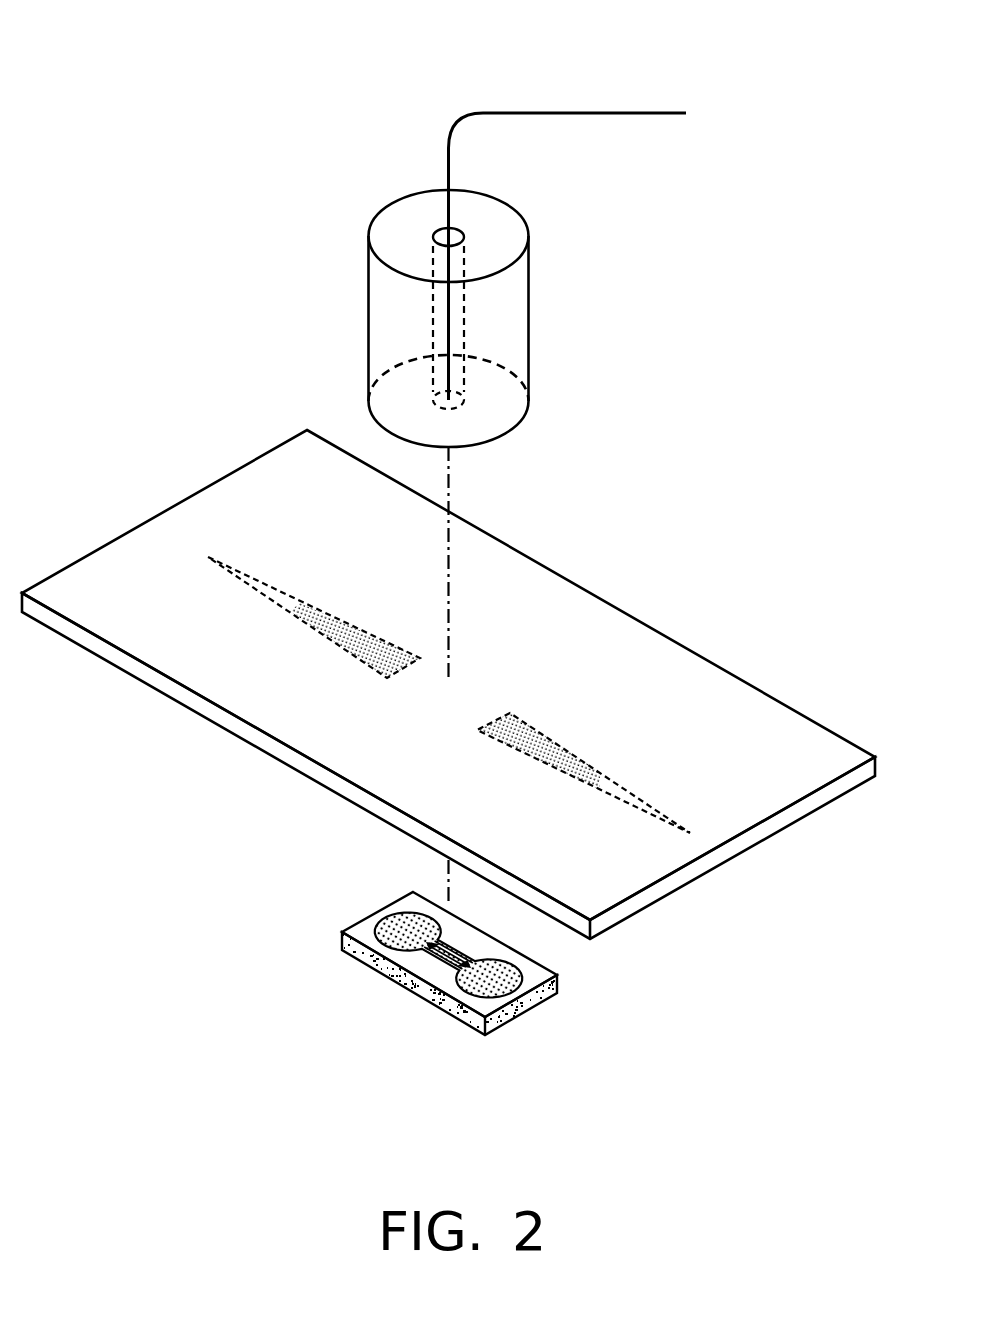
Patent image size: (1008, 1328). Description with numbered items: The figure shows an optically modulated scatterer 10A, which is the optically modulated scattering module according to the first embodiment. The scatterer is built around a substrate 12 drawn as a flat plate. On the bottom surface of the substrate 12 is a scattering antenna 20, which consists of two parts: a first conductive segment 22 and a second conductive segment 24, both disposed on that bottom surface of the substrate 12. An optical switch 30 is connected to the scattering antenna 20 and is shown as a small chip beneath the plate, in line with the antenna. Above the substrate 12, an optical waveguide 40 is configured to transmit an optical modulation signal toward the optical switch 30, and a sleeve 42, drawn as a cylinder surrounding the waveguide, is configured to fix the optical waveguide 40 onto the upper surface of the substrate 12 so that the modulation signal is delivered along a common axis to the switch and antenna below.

The optically modulated scatterer 10A is at (197, 142).
The substrate 12 is at (763, 713).
The scattering antenna 20 is at (762, 465).
The first conductive segment 22 is at (372, 633).
The second conductive segment 24 is at (540, 730).
The optical switch 30 is at (533, 1007).
The optical waveguide 40 is at (607, 110).
The sleeve 42 is at (528, 310).